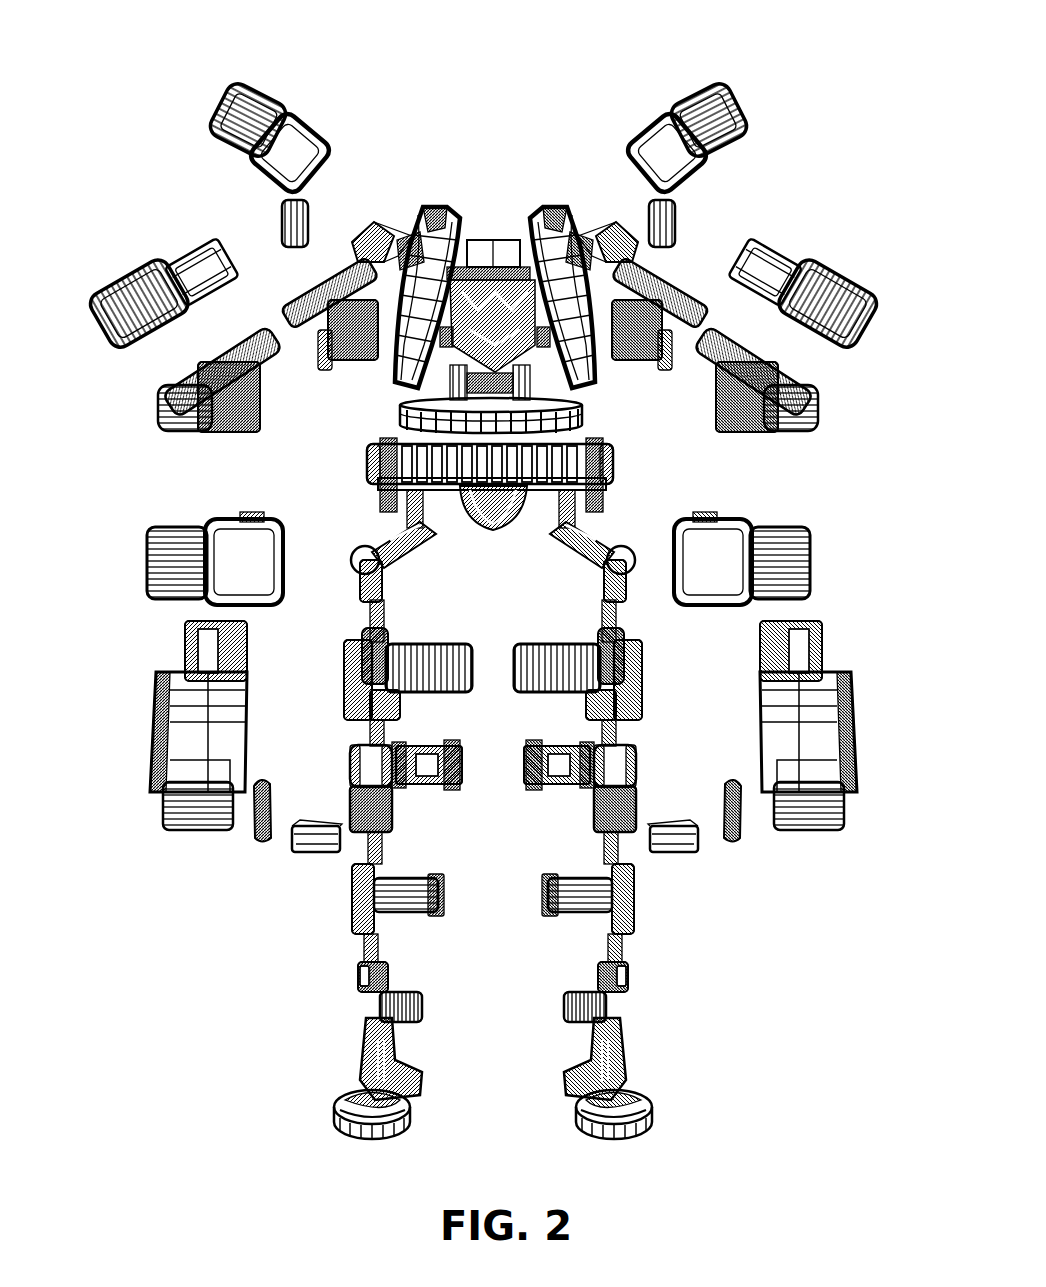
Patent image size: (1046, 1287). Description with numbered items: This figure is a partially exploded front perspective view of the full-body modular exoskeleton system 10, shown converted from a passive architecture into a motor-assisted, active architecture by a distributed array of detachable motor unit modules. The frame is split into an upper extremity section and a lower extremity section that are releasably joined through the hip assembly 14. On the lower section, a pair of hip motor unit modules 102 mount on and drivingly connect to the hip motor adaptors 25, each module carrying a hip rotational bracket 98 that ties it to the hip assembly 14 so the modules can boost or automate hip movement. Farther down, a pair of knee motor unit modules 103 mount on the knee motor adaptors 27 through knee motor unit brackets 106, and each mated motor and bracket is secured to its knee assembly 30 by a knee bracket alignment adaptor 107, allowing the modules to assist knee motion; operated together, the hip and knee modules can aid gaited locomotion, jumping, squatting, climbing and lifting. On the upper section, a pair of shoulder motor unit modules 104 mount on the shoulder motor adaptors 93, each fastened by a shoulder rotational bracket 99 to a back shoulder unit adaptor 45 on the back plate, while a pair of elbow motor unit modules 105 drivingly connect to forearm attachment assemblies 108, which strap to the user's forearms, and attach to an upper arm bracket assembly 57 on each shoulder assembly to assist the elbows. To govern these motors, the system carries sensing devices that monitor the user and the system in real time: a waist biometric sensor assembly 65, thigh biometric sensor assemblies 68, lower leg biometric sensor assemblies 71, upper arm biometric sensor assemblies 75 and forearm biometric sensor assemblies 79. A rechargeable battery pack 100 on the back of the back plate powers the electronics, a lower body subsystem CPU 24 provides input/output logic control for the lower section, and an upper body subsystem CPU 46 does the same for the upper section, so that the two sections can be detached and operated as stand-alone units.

The exoskeleton system 10 is at (160, 105).
The hip assembly 14 is at (425, 556).
The lower body subsystem CPU 24 is at (496, 542).
The hip motor adaptor 25 is at (355, 568).
The knee motor adaptor 27 is at (345, 672).
The knee assembly 30 is at (340, 798).
The back shoulder unit adaptor 45 is at (360, 325).
The upper body subsystem CPU 46 is at (490, 238).
The upper arm bracket assembly 57 is at (298, 295).
The waist biometric sensor assembly 65 is at (536, 402).
The thigh biometric sensor assembly 68 is at (432, 782).
The lower leg biometric sensor assembly 71 is at (445, 902).
The upper arm biometric sensor assembly 75 is at (357, 375).
The forearm biometric sensor assembly 79 is at (240, 420).
The shoulder motor adaptor 93 is at (368, 228).
The hip rotational bracket 98 is at (265, 515).
The shoulder rotational bracket 99 is at (310, 220).
The rechargeable battery pack 100 is at (438, 378).
The hip motor unit module 102 is at (146, 560).
The knee motor unit module 103 is at (148, 748).
The shoulder motor unit module 104 is at (240, 84).
The elbow motor unit module 105 is at (125, 264).
The knee motor unit bracket 106 is at (260, 840).
The knee bracket alignment adaptor 107 is at (316, 852).
The forearm attachment assembly 108 is at (205, 365).